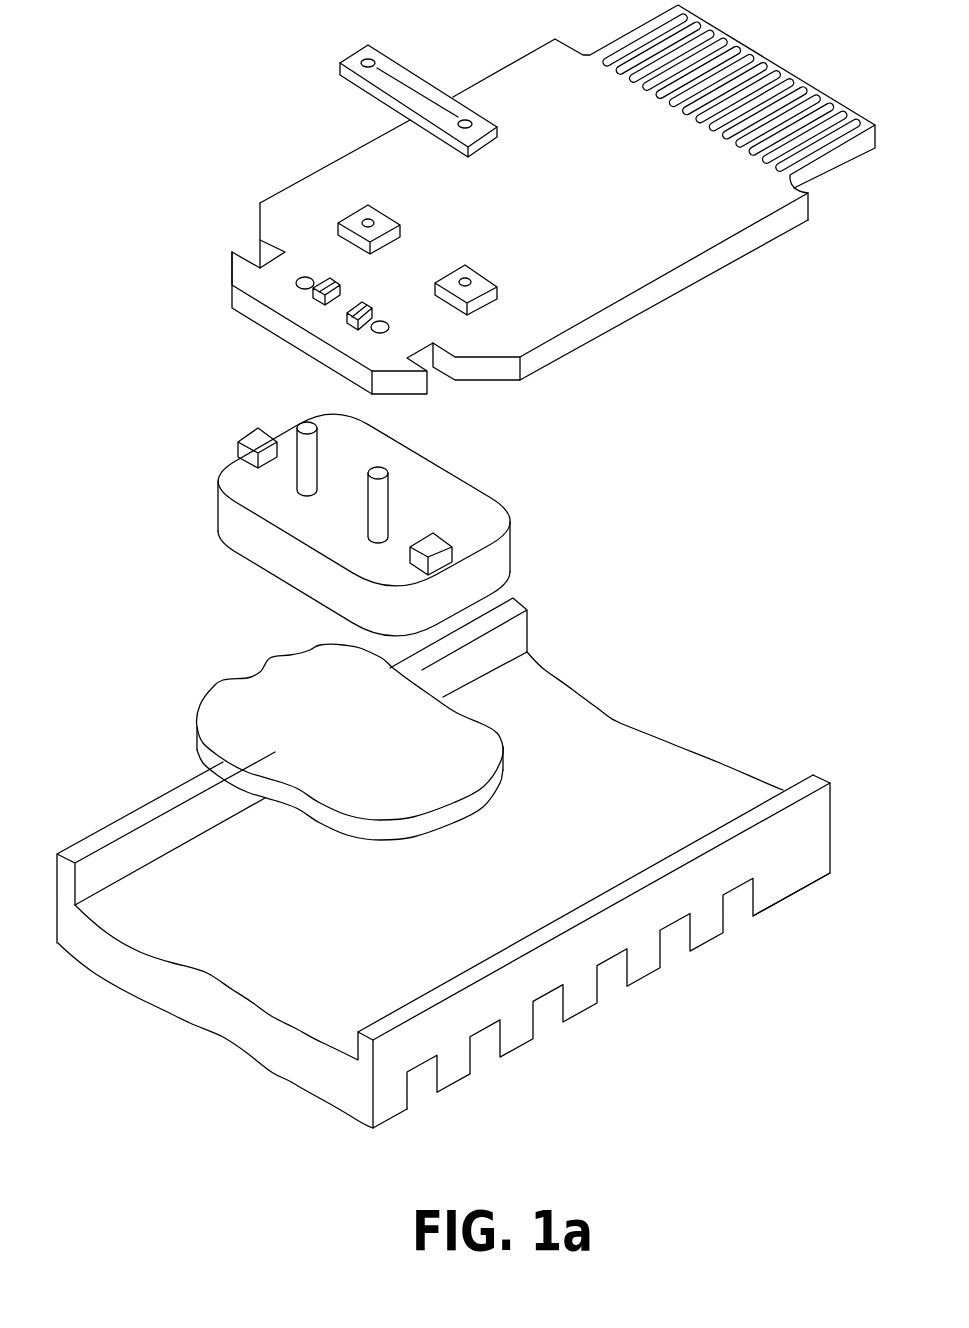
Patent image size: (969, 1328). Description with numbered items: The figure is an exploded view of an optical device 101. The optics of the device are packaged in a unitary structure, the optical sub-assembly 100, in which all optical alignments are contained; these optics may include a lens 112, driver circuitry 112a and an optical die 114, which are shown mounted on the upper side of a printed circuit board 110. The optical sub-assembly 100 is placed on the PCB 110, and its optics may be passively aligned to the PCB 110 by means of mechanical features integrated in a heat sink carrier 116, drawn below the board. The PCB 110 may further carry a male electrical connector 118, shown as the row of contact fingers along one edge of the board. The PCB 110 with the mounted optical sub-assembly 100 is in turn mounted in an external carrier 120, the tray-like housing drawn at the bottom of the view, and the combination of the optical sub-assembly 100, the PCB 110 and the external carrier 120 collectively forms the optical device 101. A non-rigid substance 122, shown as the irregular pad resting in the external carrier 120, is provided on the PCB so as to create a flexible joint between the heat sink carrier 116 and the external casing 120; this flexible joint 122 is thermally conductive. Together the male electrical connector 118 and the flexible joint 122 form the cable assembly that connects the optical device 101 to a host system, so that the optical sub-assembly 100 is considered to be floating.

The optical sub-assembly 100 is at (720, 312).
The optical device 101 is at (768, 963).
The printed circuit board 110 is at (583, 190).
The lens 112 is at (352, 58).
The driver circuitry 112a is at (463, 280).
The optical die 114 is at (358, 320).
The heat sink carrier 116 is at (432, 495).
The male electrical connector 118 is at (718, 83).
The external carrier 120 is at (162, 920).
The non-rigid substance 122 is at (287, 707).